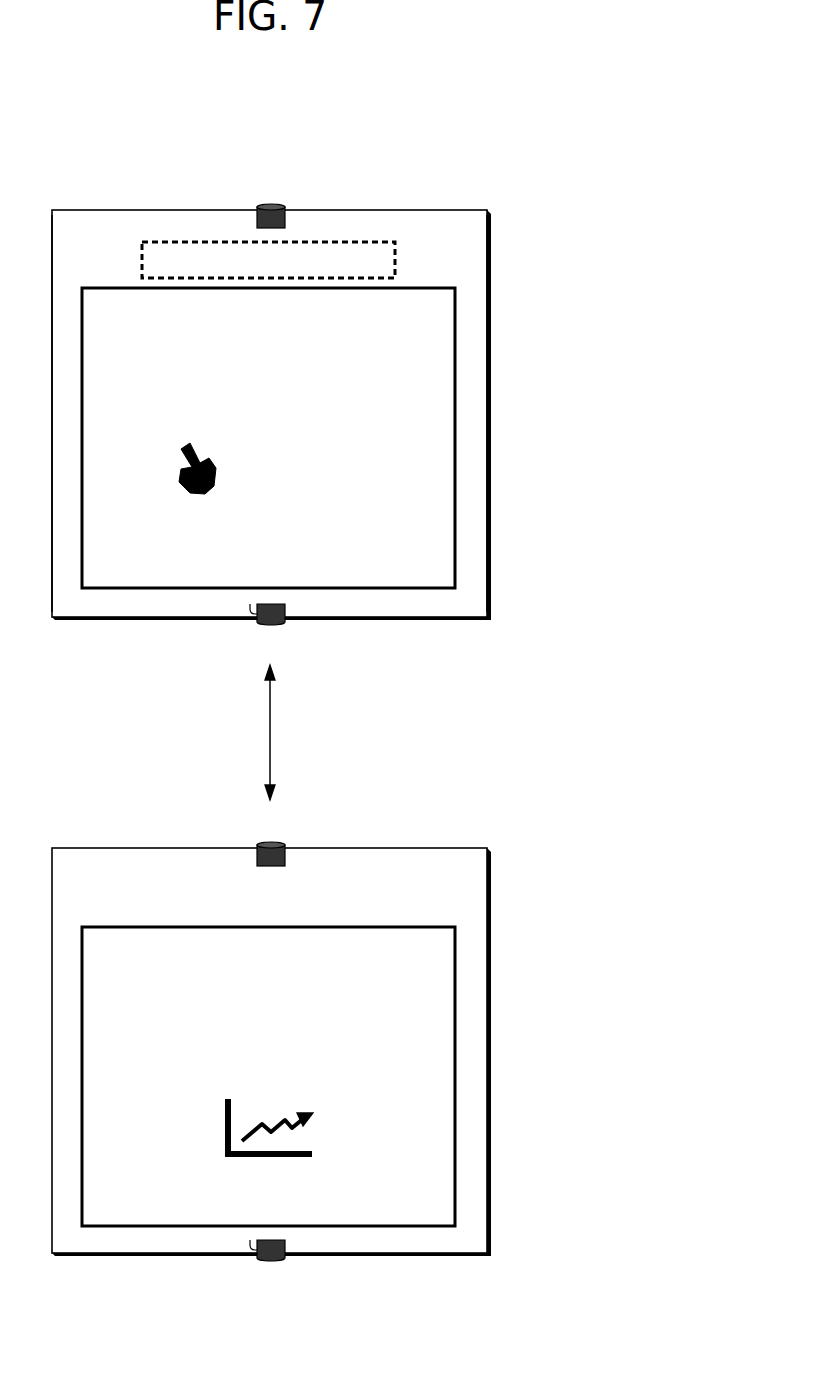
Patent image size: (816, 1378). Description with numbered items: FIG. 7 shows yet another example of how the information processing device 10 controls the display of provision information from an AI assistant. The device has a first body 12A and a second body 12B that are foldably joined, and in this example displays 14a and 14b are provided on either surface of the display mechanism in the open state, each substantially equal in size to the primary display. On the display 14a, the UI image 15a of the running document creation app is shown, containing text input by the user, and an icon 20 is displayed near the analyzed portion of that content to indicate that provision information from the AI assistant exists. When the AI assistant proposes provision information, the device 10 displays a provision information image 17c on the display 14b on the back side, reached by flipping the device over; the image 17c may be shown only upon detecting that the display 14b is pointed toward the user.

The information processing device 10 is at (269, 713).
The first body 12A is at (100, 210).
The second body 12B is at (397, 210).
The display 14a is at (203, 243).
The display 14b is at (203, 880).
The UI image 15a is at (143, 568).
The provision information image 17c is at (363, 1207).
The icon 20 is at (215, 474).